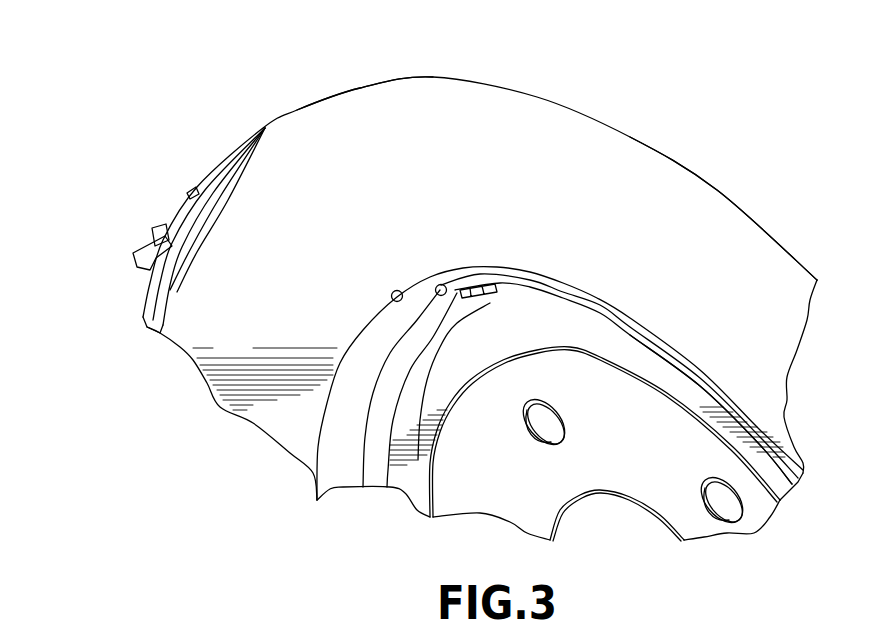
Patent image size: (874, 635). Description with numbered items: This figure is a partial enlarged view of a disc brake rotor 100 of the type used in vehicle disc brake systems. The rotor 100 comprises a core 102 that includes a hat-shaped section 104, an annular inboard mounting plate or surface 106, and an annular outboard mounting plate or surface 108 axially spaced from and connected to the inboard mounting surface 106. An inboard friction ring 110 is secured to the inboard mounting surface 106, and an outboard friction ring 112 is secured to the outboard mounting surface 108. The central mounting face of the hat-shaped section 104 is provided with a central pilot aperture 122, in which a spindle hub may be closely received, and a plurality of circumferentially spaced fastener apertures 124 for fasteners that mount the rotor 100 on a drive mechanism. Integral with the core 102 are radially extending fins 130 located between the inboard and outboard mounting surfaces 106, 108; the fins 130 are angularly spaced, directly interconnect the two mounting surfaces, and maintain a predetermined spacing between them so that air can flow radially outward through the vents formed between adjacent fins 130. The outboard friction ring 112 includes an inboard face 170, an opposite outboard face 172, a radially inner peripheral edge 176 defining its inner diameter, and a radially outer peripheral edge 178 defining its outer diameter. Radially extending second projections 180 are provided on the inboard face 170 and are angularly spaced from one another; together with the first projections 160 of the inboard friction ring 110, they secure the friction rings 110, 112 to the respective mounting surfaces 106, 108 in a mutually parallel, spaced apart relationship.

The disc brake rotor 100 is at (806, 144).
The core 102 is at (473, 497).
The hat-shaped section 104 is at (340, 477).
The inboard mounting plate 106 is at (368, 330).
The outboard mounting plate 108 is at (143, 318).
The inboard friction ring 110 is at (135, 251).
The outboard friction ring 112 is at (519, 118).
The central pilot aperture 122 is at (647, 513).
The fastener apertures 124 is at (723, 513).
The fins 130 is at (163, 240).
The first projections 160 is at (467, 293).
The inboard face 170 is at (545, 283).
The outboard face 172 is at (340, 105).
The radially inner peripheral edge 176 is at (660, 325).
The radially outer peripheral edge 178 is at (717, 192).
The second projections 180 is at (490, 290).